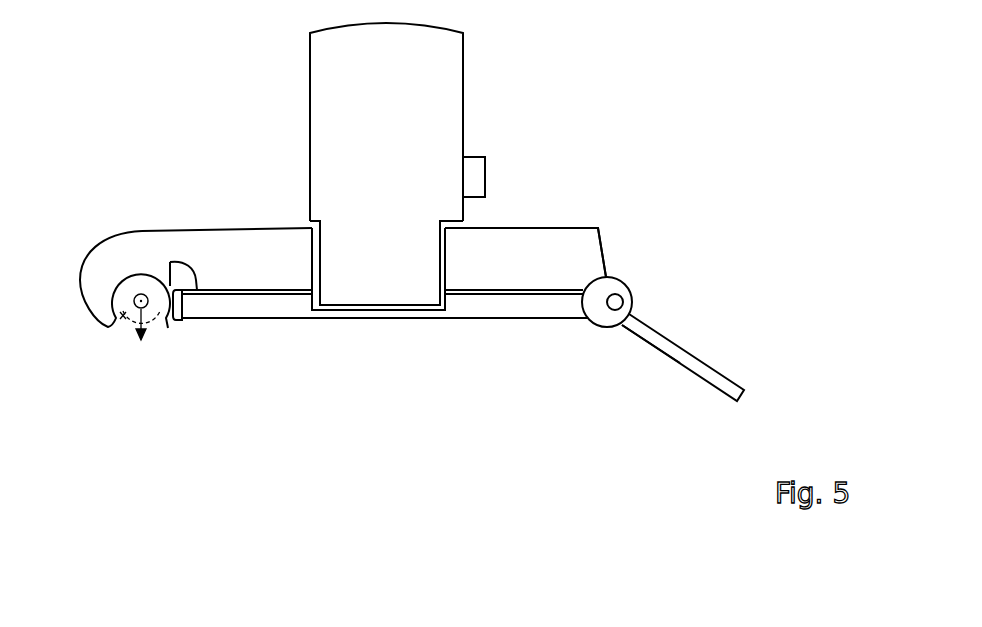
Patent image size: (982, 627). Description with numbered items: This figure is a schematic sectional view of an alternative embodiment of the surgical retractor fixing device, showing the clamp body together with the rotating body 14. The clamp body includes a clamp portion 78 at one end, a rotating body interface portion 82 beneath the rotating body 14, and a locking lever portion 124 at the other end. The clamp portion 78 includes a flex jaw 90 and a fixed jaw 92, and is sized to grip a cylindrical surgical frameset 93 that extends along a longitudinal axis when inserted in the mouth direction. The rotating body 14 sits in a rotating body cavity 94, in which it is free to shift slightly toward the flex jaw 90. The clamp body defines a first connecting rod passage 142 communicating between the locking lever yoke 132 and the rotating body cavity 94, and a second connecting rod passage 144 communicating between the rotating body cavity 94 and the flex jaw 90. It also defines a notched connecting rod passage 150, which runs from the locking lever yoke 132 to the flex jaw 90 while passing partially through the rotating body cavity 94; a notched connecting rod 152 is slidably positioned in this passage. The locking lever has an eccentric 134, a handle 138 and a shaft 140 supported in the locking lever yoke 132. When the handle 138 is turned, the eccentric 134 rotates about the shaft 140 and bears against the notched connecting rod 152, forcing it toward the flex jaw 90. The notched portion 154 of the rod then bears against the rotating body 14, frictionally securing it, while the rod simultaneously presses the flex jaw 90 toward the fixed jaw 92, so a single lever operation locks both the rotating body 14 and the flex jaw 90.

The rotating body 14 is at (463, 75).
The clamp portion 78 is at (82, 262).
The rotating body interface portion 82 is at (307, 211).
The rotating body cavity 94 is at (447, 234).
The locking lever portion 124 is at (568, 228).
The notched connecting rod passage 150 is at (563, 290).
The eccentric 134 is at (603, 288).
The shaft 140 is at (617, 301).
The handle 138 is at (737, 389).
The locking lever yoke 132 is at (617, 357).
The second connecting rod passage 144 is at (263, 290).
The notched portion 154 is at (392, 312).
The first connecting rod passage 142 is at (468, 292).
The notched connecting rod 152 is at (493, 312).
The flex jaw 90 is at (167, 328).
The cylindrical surgical frameset 93 is at (128, 313).
The fixed jaw 92 is at (117, 315).